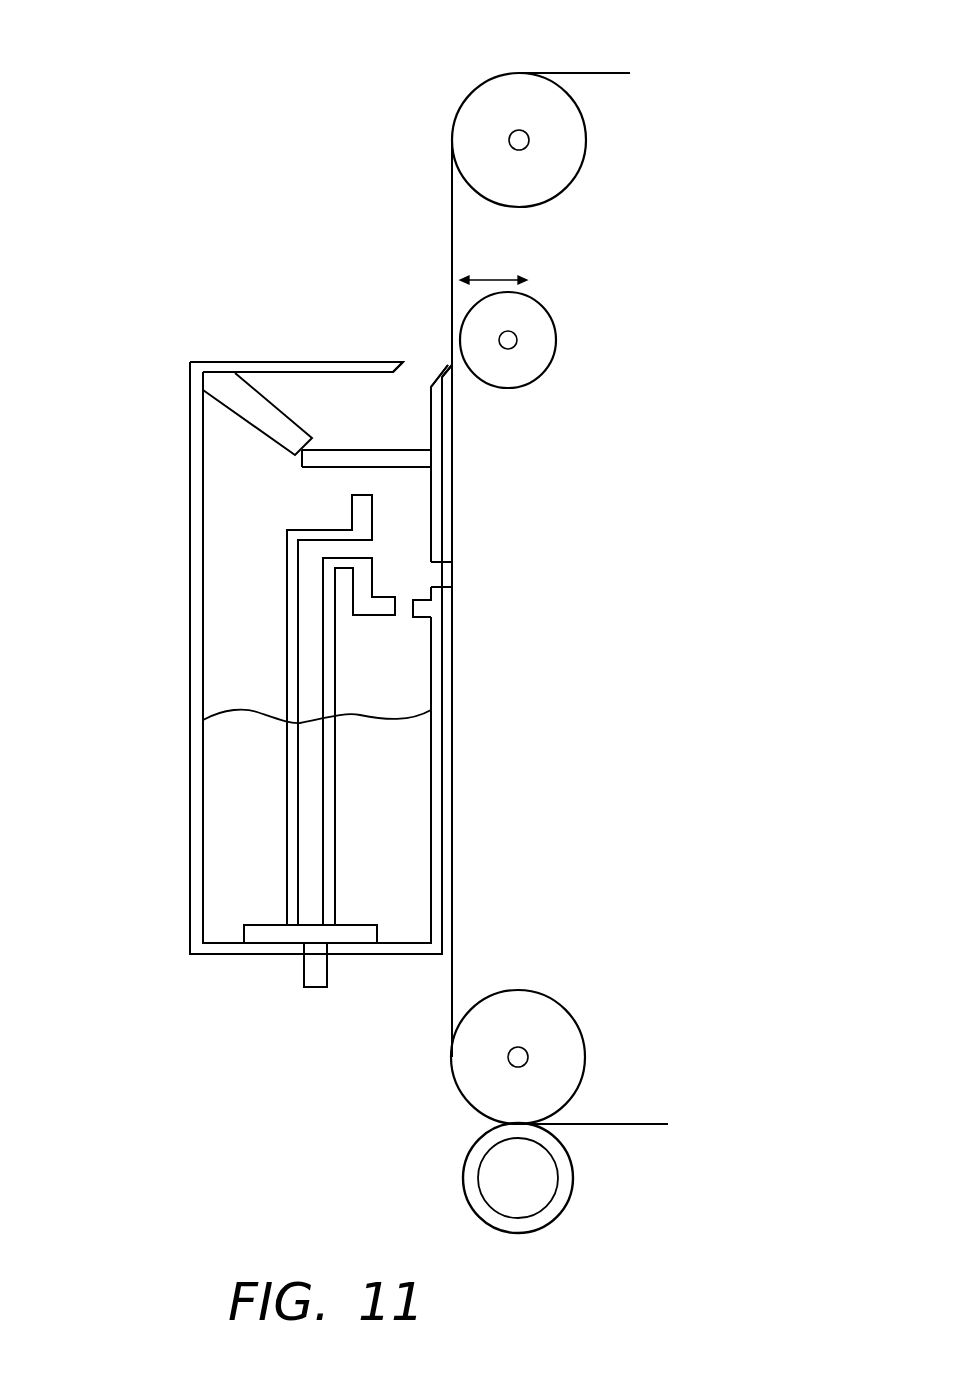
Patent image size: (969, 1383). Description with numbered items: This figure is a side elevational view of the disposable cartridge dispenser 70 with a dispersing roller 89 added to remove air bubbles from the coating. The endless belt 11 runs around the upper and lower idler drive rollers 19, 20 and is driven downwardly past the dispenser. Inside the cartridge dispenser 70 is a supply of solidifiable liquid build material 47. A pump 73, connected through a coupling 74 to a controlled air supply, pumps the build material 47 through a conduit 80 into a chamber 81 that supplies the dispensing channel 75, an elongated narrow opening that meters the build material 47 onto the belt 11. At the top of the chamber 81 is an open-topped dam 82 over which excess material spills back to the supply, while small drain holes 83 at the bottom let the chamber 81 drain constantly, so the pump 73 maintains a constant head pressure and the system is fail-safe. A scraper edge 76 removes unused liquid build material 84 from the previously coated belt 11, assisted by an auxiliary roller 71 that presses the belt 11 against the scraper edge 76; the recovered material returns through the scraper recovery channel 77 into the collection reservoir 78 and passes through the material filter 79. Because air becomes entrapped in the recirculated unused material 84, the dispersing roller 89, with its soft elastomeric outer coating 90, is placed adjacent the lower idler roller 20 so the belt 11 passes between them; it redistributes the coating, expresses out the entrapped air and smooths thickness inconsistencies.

The belt 11 is at (598, 73).
The idler drive roller 19 is at (586, 140).
The idler drive roller 20 is at (572, 1015).
The solidifiable liquid build material 47 is at (218, 800).
The cartridge dispenser 70 is at (160, 618).
The auxiliary roller 71 is at (553, 320).
The pump 73 is at (250, 935).
The coupling 74 is at (327, 968).
The dispensing channel 75 is at (455, 582).
The scraper edge 76 is at (452, 365).
The scraper recovery channel 77 is at (410, 368).
The collection reservoir 78 is at (270, 382).
The material filter 79 is at (228, 403).
The conduit 80 is at (308, 677).
The chamber 81 is at (403, 550).
The dam 82 is at (373, 518).
The drain holes 83 is at (403, 605).
The unused liquid build material 84 is at (410, 427).
The dispersing roller 89 is at (490, 1178).
The outer coating 90 is at (522, 1178).